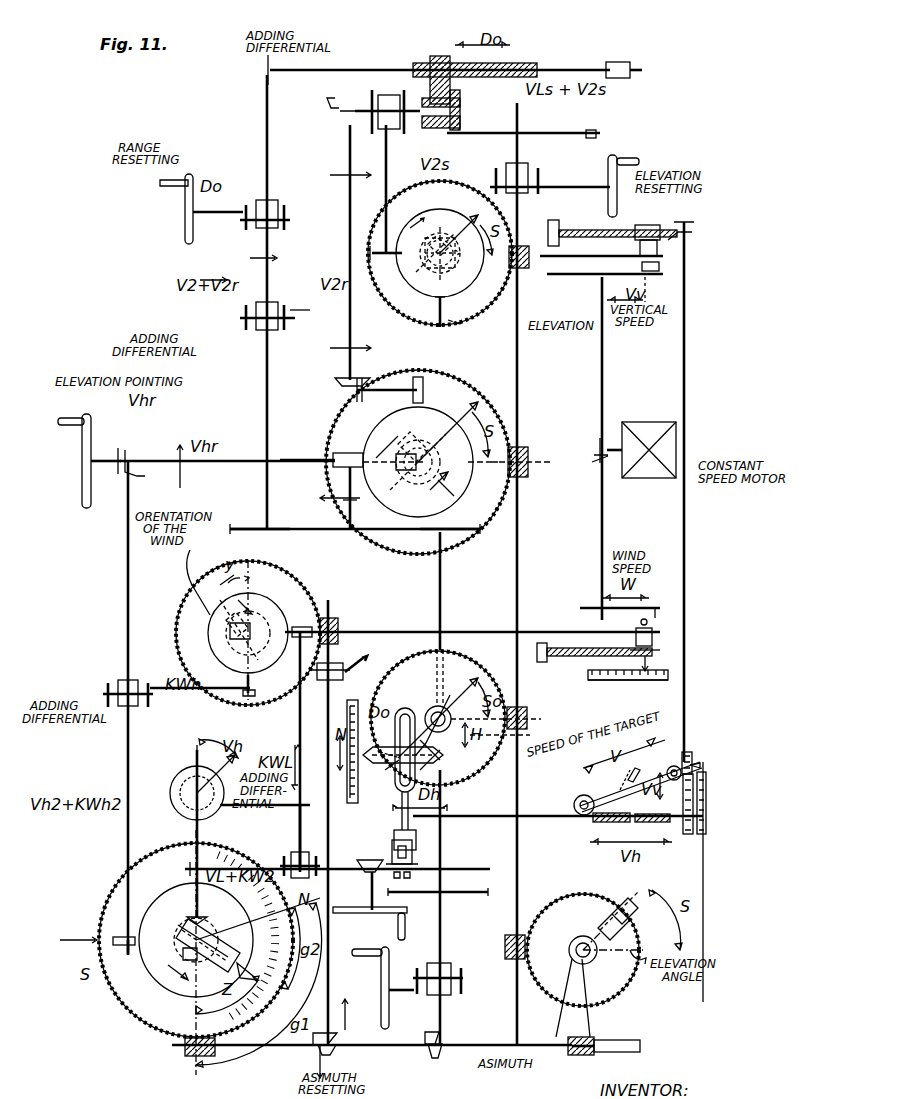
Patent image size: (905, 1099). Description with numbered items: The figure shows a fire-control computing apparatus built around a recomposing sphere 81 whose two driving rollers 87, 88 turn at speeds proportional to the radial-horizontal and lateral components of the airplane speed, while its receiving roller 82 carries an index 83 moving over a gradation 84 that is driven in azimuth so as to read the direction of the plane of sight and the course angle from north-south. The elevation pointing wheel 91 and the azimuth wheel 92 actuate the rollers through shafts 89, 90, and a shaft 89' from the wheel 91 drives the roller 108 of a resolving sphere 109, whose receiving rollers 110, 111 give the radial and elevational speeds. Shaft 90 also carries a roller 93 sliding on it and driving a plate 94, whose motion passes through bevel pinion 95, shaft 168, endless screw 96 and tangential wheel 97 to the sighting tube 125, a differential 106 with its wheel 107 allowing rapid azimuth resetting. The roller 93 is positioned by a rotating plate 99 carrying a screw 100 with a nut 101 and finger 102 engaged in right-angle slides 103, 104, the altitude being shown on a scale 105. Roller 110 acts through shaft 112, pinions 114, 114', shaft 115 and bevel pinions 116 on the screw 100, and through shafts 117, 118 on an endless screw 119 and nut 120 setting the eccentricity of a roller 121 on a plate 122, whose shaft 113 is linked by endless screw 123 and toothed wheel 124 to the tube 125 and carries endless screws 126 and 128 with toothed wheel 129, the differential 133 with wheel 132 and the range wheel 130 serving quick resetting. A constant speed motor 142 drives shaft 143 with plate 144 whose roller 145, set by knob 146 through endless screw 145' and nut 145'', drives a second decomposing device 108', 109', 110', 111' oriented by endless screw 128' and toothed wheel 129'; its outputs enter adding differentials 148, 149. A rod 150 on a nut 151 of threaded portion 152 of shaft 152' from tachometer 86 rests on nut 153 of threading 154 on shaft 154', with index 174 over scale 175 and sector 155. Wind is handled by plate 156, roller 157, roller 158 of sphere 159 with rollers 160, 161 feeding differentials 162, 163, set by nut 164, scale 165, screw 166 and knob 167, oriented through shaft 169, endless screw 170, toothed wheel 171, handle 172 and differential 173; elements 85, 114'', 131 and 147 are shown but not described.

The sphere 81 is at (160, 980).
The receiving roller 82 is at (220, 950).
The index 83 is at (237, 965).
The gradation 84 is at (252, 983).
The shaft 85 is at (192, 832).
The tachometer 86 is at (180, 776).
The driving roller 87 is at (115, 940).
The driving roller 88 is at (246, 933).
The shaft 89 is at (109, 708).
The shaft 89' is at (226, 449).
The shaft 90 is at (252, 869).
The elevation pointing wheel 91 is at (89, 433).
The azimuth pointing wheel 92 is at (362, 912).
The roller 93 is at (412, 858).
The plate 94 is at (478, 892).
The bevel pinion 95 is at (432, 1050).
The endless screw 96 is at (577, 1057).
The tangential wheel 97 is at (626, 1054).
The rotating plate 99 is at (470, 692).
The screw 100 is at (395, 772).
The nut 101 is at (390, 758).
The finger 102 is at (448, 760).
The slide 103 is at (402, 795).
The slide 104 is at (450, 755).
The scale 105 is at (347, 784).
The differential 106 is at (442, 966).
The wheel 107 is at (382, 966).
The driving roller 108 is at (415, 468).
The driving roller 108' is at (420, 259).
The resolving sphere 109 is at (418, 462).
The decomposing sphere 109' is at (440, 253).
The receiving roller 110 is at (321, 472).
The receiving roller 110' is at (427, 321).
The receiving roller 111 is at (418, 375).
The receiving roller 111' is at (360, 249).
The shaft 112 is at (350, 506).
The shaft 113 is at (517, 215).
The pinion 114 is at (355, 541).
The pinion 114' is at (436, 555).
The bar 114'' is at (251, 509).
The shaft 115 is at (440, 576).
The bevel pinions 116 is at (442, 706).
The shaft 117 is at (267, 120).
The shaft 118 is at (332, 70).
The endless screw 119 is at (555, 67).
The nut 120 is at (432, 54).
The roller 121 is at (460, 100).
The plate 122 is at (593, 130).
The endless screw 123 is at (510, 960).
The toothed wheel 124 is at (577, 988).
The sighting tube 125 is at (635, 886).
The endless screw 126 is at (528, 726).
The endless screw 128 is at (539, 460).
The endless screw 128' is at (532, 277).
The toothed wheel 129 is at (435, 481).
The toothed wheel 129' is at (453, 271).
The rapid range resetting wheel 130 is at (172, 180).
The differential 131 is at (278, 210).
The elevation resetting wheel 132 is at (636, 160).
The differential 133 is at (526, 177).
The constant speed motor 142 is at (654, 472).
The shaft 143 is at (604, 346).
The plate 144 is at (580, 274).
The roller 145 is at (665, 282).
The endless screw 145' is at (618, 222).
The nut 145'' is at (651, 226).
The knob 146 is at (554, 222).
The bar 147 is at (585, 256).
The adding differential 148 is at (252, 308).
The adding differential 149 is at (380, 118).
The rod 150 is at (614, 792).
The nut 151 is at (583, 814).
The threaded portion 152 is at (653, 828).
The shaft 152' is at (558, 829).
The nut 153 is at (677, 762).
The threading 154 is at (690, 820).
The shaft 154' is at (671, 492).
The graduated sector 155 is at (614, 822).
The plate 156 is at (570, 608).
The roller 157 is at (652, 640).
The driving roller 158 is at (232, 656).
The decomposing sphere 159 is at (223, 632).
The receiving roller 160 is at (244, 696).
The receiving roller 161 is at (308, 617).
The adding differential 162 is at (113, 684).
The adding differential 163 is at (305, 852).
The nut 164 is at (650, 666).
The speed scale 165 is at (612, 680).
The screw 166 is at (591, 667).
The knob 167 is at (542, 662).
The shaft 168 is at (401, 1050).
The shaft 169 is at (340, 820).
The endless screw 170 is at (336, 623).
The toothed wheel 171 is at (276, 680).
The handle 172 is at (366, 668).
The differential 173 is at (350, 660).
The index 174 is at (697, 762).
The vertical speed scale 175 is at (703, 843).